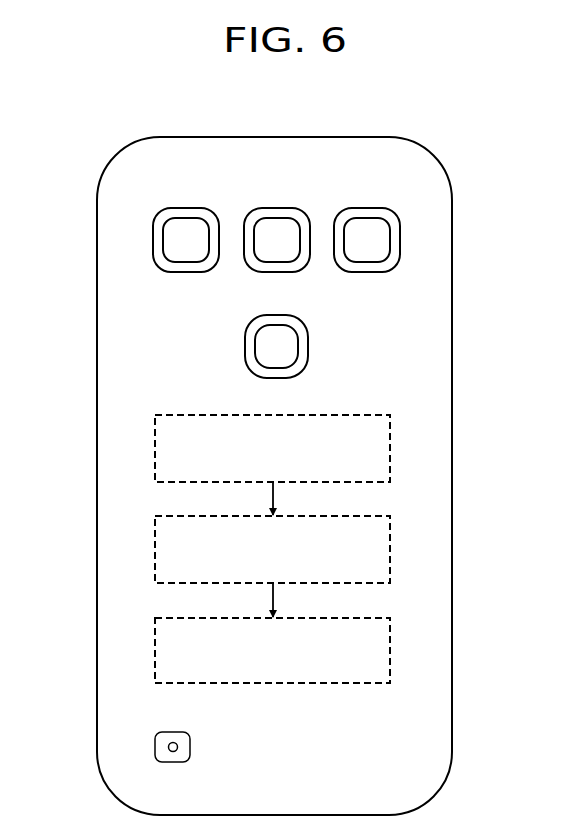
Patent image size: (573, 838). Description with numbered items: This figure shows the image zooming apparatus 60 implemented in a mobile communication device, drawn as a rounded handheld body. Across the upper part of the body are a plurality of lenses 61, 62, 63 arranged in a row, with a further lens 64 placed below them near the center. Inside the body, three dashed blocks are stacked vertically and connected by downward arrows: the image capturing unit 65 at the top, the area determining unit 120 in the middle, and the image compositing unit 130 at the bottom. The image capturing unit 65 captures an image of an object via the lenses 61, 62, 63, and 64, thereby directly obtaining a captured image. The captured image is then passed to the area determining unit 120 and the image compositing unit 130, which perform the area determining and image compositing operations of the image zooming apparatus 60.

The image zooming apparatus 60 is at (432, 155).
The lens 61 is at (277, 232).
The lens 62 is at (367, 230).
The lens 63 is at (195, 237).
The lens 64 is at (267, 342).
The image capturing unit 65 is at (390, 450).
The area determining unit 120 is at (390, 553).
The image compositing unit 130 is at (390, 652).